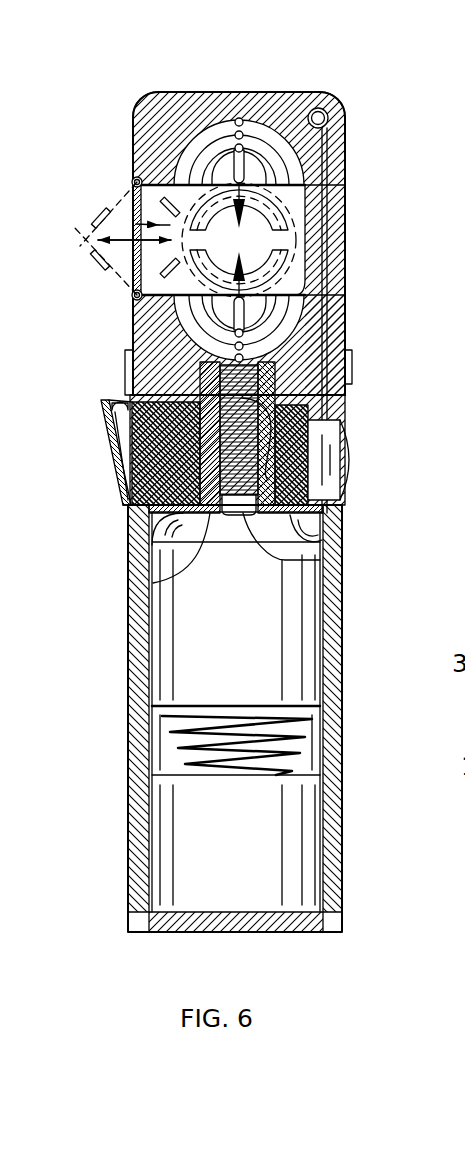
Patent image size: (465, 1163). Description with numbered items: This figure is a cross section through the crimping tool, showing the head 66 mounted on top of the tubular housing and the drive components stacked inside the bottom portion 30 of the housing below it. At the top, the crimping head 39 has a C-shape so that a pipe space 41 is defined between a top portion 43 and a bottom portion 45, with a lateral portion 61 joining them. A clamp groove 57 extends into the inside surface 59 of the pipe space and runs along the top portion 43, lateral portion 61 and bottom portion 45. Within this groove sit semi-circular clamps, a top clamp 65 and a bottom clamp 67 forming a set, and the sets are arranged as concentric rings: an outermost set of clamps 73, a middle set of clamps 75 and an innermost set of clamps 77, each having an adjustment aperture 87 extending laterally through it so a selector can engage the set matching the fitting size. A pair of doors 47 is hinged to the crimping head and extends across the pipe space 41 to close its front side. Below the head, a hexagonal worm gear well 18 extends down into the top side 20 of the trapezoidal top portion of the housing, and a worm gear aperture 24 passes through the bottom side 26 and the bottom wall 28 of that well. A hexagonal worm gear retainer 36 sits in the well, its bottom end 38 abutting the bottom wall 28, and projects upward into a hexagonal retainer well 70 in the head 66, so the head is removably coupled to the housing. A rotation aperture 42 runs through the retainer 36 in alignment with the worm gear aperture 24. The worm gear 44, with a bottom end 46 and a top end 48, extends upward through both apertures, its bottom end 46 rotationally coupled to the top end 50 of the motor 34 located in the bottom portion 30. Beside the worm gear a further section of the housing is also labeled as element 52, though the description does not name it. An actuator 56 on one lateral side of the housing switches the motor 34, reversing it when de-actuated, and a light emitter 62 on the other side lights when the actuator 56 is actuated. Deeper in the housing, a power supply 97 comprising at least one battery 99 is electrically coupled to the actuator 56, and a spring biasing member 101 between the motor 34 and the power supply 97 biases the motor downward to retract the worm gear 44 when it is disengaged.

The hexagonal worm gear well 18 is at (272, 422).
The top side 20 is at (125, 382).
The worm gear aperture 24 is at (250, 497).
The bottom side 26 is at (322, 527).
The bottom wall 28 is at (123, 481).
The bottom portion 30 is at (127, 635).
The motor 34 is at (160, 668).
The worm gear retainer 36 is at (128, 421).
The bottom end 38 is at (127, 503).
The crimping head 39 is at (332, 92).
The pipe space 41 is at (134, 224).
The rotation aperture 42 is at (255, 393).
The top portion 43 is at (131, 138).
The worm gear 44 is at (132, 547).
The bottom portion 45 is at (103, 294).
The bottom end 46 is at (130, 303).
The pair of doors 47 is at (108, 200).
The top end 48 is at (278, 557).
The top end 50 is at (153, 583).
The seal block 52 is at (114, 457).
The actuator 56 is at (356, 447).
The clamp groove 57 is at (239, 116).
The inside surface 59 is at (297, 222).
The lateral portion 61 is at (348, 282).
The light emitter 62 is at (135, 395).
The top clamp 65 is at (176, 112).
The head 66 is at (128, 90).
The bottom clamp 67 is at (353, 347).
The hexagonal retainer well 70 is at (215, 352).
The outermost set of clamps 73 is at (214, 124).
The middle set of clamps 75 is at (278, 148).
The innermost set of clamps 77 is at (288, 124).
The adjustment aperture 87 is at (305, 183).
The power supply 97 is at (163, 790).
The battery 99 is at (305, 846).
The spring biasing member 101 is at (168, 735).